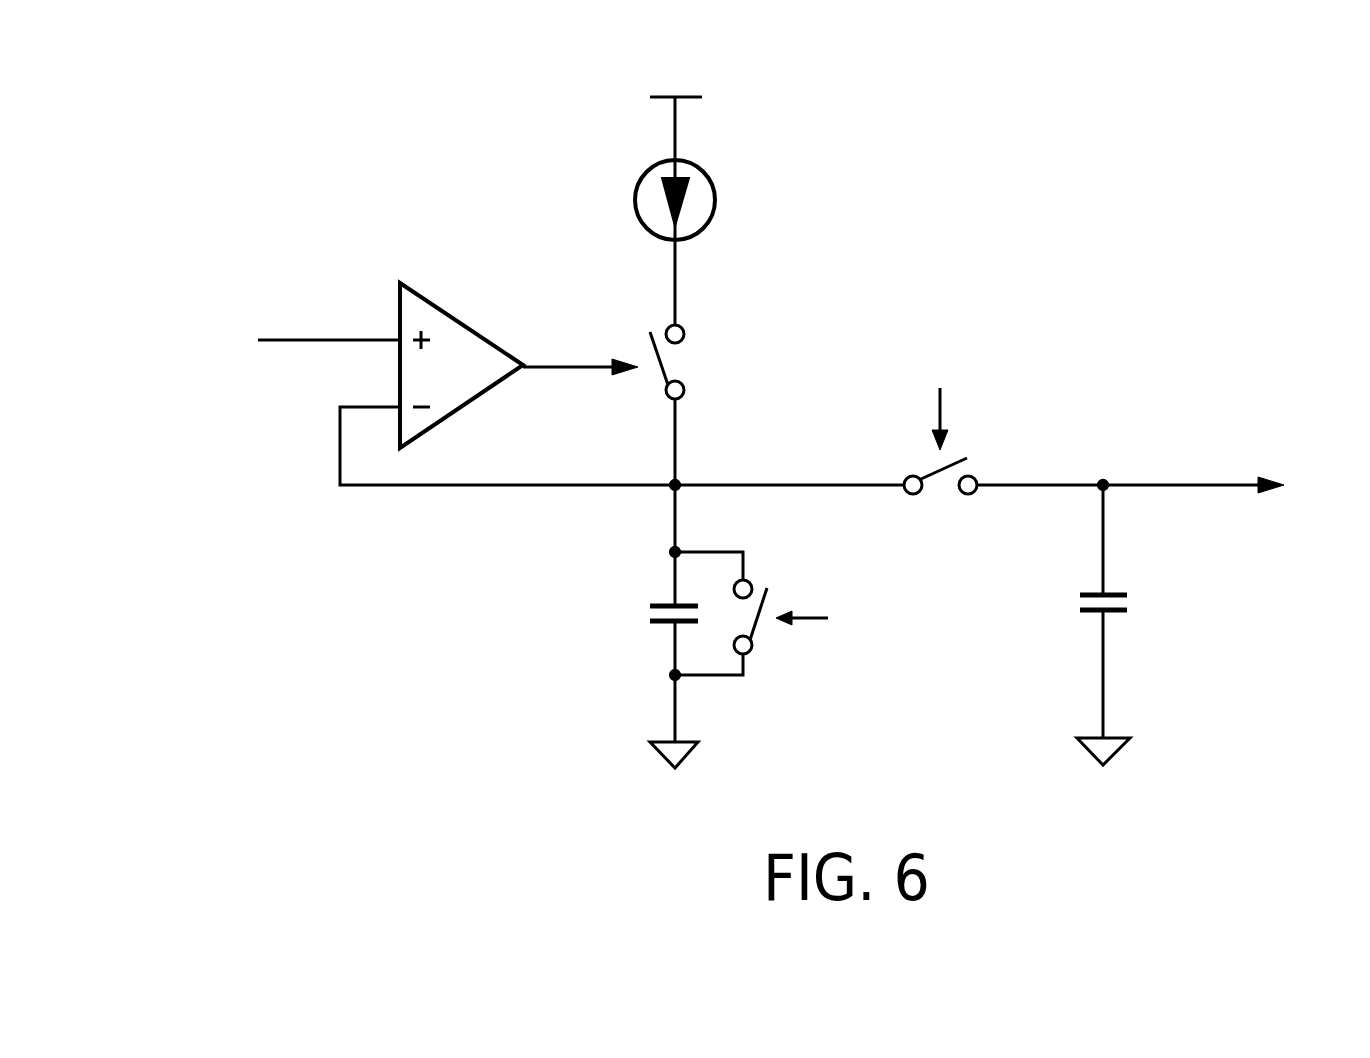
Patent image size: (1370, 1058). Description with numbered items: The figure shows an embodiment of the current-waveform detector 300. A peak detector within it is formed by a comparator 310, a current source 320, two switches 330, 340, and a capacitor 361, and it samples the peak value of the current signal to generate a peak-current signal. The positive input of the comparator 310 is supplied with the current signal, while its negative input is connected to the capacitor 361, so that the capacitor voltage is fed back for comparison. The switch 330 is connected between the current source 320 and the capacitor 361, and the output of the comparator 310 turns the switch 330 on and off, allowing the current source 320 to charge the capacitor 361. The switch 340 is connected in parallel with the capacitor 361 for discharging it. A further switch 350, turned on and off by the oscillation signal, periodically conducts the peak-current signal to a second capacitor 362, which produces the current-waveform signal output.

The current-waveform detector 300 is at (1274, 101).
The comparator 310 is at (465, 315).
The current source 320 is at (718, 200).
The switch 330 is at (686, 362).
The switch 340 is at (757, 657).
The switch 350 is at (940, 503).
The capacitor 361 is at (640, 619).
The capacitor 362 is at (1131, 603).